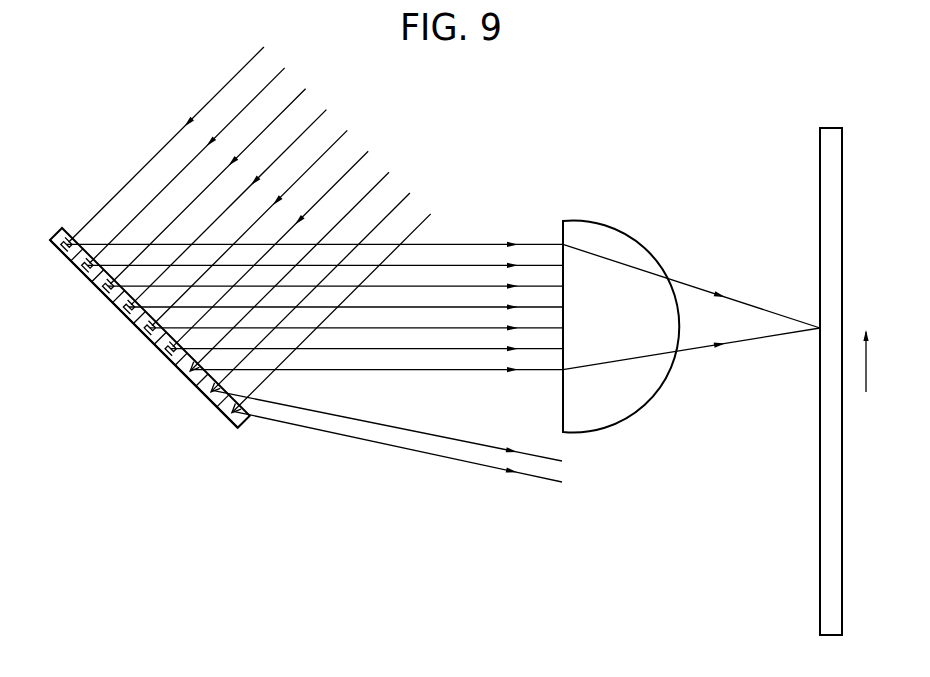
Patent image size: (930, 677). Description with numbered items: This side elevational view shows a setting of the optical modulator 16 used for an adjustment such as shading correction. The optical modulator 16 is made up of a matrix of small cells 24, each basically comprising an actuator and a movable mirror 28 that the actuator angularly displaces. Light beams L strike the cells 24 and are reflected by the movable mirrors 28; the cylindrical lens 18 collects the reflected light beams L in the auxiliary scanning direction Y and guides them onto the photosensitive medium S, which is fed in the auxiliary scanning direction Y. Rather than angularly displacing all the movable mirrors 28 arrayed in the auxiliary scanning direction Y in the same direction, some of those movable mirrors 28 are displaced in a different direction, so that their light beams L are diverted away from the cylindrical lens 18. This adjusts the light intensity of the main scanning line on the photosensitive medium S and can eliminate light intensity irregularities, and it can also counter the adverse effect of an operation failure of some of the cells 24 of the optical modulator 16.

The optical modulator 16 is at (116, 367).
The cylindrical lens 18 is at (655, 324).
The cell 24 is at (52, 268).
The movable mirror 28 is at (126, 351).
The light beam L is at (228, 83).
The photosensitive medium S is at (830, 128).
The auxiliary scanning direction Y is at (875, 361).